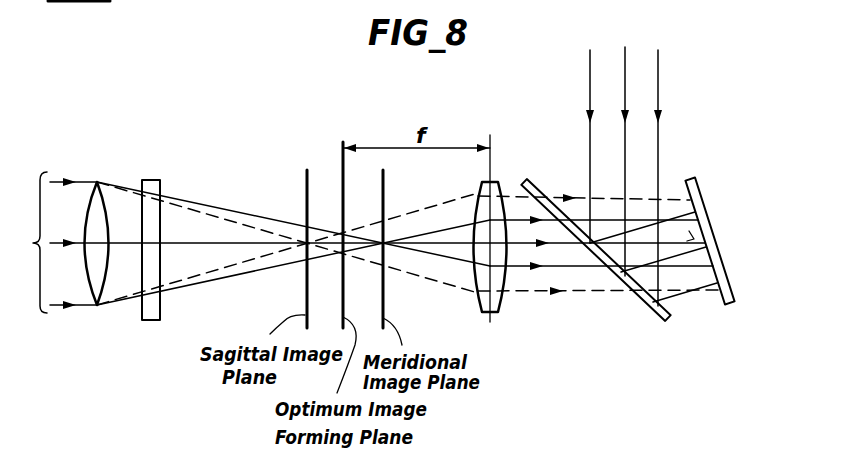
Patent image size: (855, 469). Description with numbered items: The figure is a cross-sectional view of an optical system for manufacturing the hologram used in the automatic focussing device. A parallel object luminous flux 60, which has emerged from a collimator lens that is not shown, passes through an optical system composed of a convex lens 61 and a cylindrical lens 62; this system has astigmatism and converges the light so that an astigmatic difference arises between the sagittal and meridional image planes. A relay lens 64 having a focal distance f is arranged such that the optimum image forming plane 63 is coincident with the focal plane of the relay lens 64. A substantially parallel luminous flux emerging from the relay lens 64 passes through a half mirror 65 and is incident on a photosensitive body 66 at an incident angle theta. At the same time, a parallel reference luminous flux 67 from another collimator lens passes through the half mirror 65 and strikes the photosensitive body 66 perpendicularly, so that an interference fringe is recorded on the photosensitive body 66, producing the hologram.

The parallel object luminous flux 60 is at (20, 240).
The convex lens 61 is at (98, 181).
The cylindrical lens 62 is at (152, 320).
The optimum image forming plane 63 is at (343, 182).
The relay lens 64 is at (497, 312).
The half mirror 65 is at (662, 316).
The photosensitive body 66 is at (694, 176).
The parallel reference luminous flux 67 is at (663, 42).